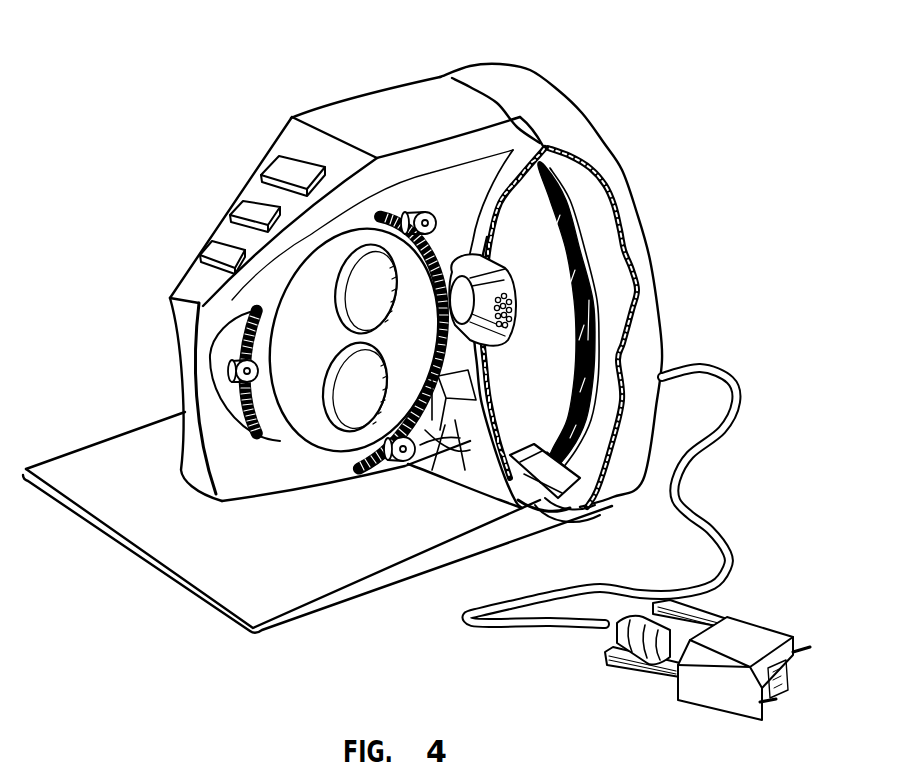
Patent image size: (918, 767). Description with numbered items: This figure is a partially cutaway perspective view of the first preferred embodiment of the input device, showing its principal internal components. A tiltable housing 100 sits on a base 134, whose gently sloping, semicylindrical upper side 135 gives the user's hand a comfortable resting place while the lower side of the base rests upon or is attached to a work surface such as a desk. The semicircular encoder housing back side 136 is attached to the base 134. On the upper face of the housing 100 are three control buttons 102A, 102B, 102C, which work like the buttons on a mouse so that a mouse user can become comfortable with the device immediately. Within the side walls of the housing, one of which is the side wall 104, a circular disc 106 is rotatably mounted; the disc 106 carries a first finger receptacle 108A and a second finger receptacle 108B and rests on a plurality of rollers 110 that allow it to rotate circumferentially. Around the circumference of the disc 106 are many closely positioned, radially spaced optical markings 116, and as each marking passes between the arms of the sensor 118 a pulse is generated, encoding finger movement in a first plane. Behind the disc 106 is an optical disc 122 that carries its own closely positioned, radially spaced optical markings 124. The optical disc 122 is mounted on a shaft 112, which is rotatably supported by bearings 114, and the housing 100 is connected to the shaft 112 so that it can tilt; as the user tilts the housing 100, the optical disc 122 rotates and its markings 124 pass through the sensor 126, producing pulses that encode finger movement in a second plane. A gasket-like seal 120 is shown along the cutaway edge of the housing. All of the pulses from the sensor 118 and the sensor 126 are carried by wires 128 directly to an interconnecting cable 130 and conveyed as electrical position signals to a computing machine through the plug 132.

The tiltable housing 100 is at (382, 72).
The control button 102A is at (283, 167).
The control button 102B is at (250, 208).
The control button 102C is at (215, 250).
The side wall 104 is at (230, 468).
The disc 106 is at (315, 360).
The first finger receptacle 108A is at (377, 302).
The second finger receptacle 108B is at (363, 401).
The rollers 110 is at (437, 228).
The shaft 112 is at (492, 297).
The bearings 114 is at (512, 318).
The optical markings 116 is at (416, 458).
The sensor 118 is at (440, 375).
The gasket 120 is at (456, 430).
The optical disc 122 is at (548, 388).
The optical markings 124 is at (580, 250).
The sensor 126 is at (522, 512).
The wires 128 is at (560, 518).
The interconnecting cable 130 is at (690, 510).
The plug 132 is at (730, 642).
The base 134 is at (447, 552).
The upper side 135 is at (302, 564).
The encoder housing back side 136 is at (610, 144).